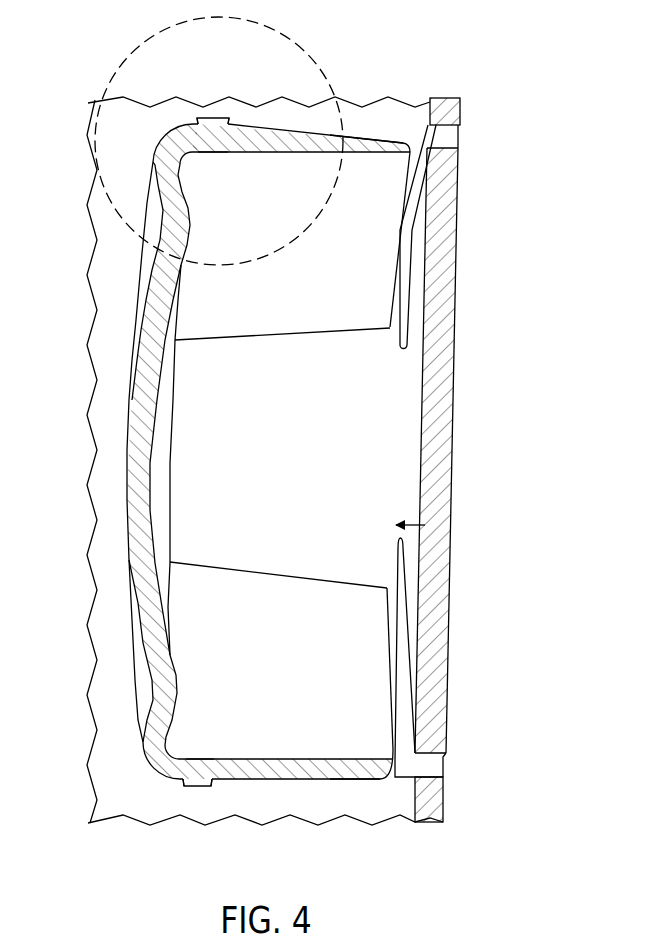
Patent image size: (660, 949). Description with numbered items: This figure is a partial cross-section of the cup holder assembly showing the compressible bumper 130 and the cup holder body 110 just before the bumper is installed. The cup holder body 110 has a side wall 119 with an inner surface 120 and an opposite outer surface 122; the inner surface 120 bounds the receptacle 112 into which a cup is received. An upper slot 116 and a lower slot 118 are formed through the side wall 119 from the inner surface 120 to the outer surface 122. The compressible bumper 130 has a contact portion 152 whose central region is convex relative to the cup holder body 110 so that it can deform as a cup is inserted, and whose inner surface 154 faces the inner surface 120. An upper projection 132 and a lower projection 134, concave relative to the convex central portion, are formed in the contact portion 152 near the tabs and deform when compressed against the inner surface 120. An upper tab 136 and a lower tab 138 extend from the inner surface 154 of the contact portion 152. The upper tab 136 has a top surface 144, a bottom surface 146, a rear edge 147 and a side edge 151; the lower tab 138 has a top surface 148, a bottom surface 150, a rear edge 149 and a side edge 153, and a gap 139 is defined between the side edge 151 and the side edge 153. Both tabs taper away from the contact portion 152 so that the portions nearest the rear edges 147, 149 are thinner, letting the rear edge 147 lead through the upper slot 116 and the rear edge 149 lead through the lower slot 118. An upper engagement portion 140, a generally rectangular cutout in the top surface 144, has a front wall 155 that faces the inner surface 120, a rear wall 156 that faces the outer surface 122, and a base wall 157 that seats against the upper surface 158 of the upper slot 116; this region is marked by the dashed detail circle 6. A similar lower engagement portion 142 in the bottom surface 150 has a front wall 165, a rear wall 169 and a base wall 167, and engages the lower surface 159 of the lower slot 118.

The detail circle for FIG. 6 is at (116, 70).
The cup holder body 110 is at (568, 438).
The receptacle 112 is at (104, 227).
The upper slot 116 is at (458, 138).
The lower slot 118 is at (444, 767).
The side wall 119 is at (449, 307).
The inner surface 120 is at (421, 453).
The outer surface 122 is at (454, 488).
The compressible bumper 130 is at (102, 438).
The upper projection 132 is at (188, 214).
The lower projection 134 is at (174, 688).
The upper tab 136 is at (290, 150).
The lower tab 138 is at (314, 769).
The gap 139 is at (425, 524).
The upper engagement portion 140 is at (215, 115).
The lower engagement portion 142 is at (197, 792).
The top surface 144 is at (352, 134).
The bottom surface 146 is at (273, 330).
The rear edge 147 is at (400, 270).
The top surface 148 is at (268, 576).
The rear edge 149 is at (392, 672).
The bottom surface 150 is at (343, 780).
The side edge 151 is at (336, 332).
The contact portion 152 is at (126, 512).
The side edge 153 is at (333, 580).
The inner surface 154 is at (152, 474).
The front wall 155 is at (201, 118).
The rear wall 156 is at (229, 118).
The base wall 157 is at (223, 152).
The upper surface 158 is at (450, 105).
The lower surface 159 is at (426, 813).
The front wall 165 is at (187, 787).
The base wall 167 is at (200, 777).
The rear wall 169 is at (208, 787).